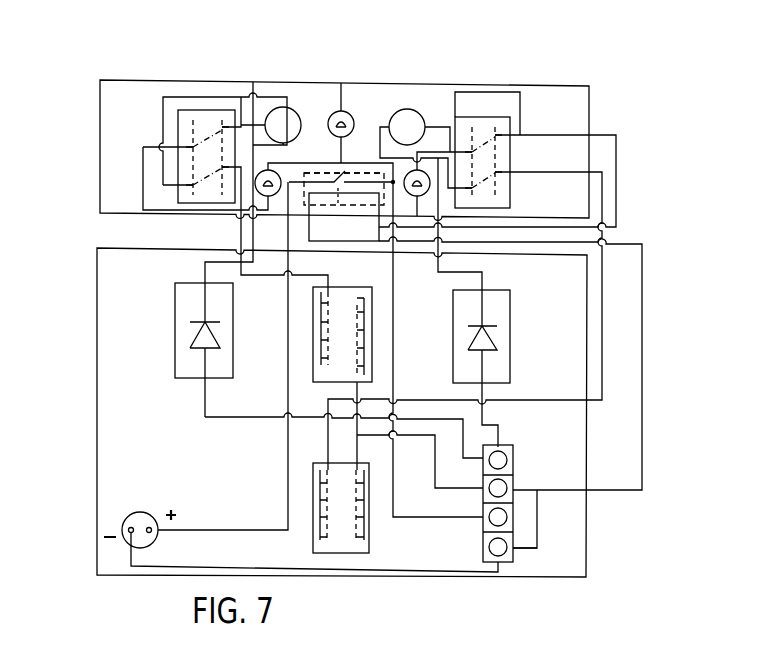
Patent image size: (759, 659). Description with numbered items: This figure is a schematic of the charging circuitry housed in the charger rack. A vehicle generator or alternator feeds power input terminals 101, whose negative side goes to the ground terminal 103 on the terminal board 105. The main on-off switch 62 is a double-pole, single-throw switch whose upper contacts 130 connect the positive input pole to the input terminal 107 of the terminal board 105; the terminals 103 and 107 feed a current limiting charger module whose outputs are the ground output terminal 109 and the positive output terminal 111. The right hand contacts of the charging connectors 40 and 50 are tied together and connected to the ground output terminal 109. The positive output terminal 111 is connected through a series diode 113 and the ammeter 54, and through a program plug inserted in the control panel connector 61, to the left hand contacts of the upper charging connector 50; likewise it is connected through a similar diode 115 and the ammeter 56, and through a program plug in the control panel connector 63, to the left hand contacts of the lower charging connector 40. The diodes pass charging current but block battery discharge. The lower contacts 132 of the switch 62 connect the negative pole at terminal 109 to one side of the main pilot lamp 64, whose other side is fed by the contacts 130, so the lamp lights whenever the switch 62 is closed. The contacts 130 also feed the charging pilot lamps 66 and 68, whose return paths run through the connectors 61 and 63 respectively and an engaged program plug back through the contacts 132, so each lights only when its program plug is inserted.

The charging connector 40 is at (347, 545).
The charging connector 50 is at (323, 372).
The ammeter 54 is at (291, 109).
The ammeter 56 is at (416, 110).
The control panel connector 61 is at (203, 122).
The switch 62 is at (362, 175).
The control panel connector 63 is at (481, 125).
The main pilot lamp 64 is at (343, 110).
The first charging pilot light 66 is at (265, 170).
The second pilot light 68 is at (423, 172).
The power input terminals 101 is at (122, 524).
The ground terminal 103 is at (498, 547).
The terminal board 105 is at (512, 467).
The input terminal 107 is at (498, 517).
The ground output terminal 109 is at (498, 492).
The positive output terminal 111 is at (507, 457).
The diode 113 is at (193, 337).
The diode 115 is at (485, 345).
The upper contacts 130 is at (335, 176).
The lower contacts 132 is at (340, 190).